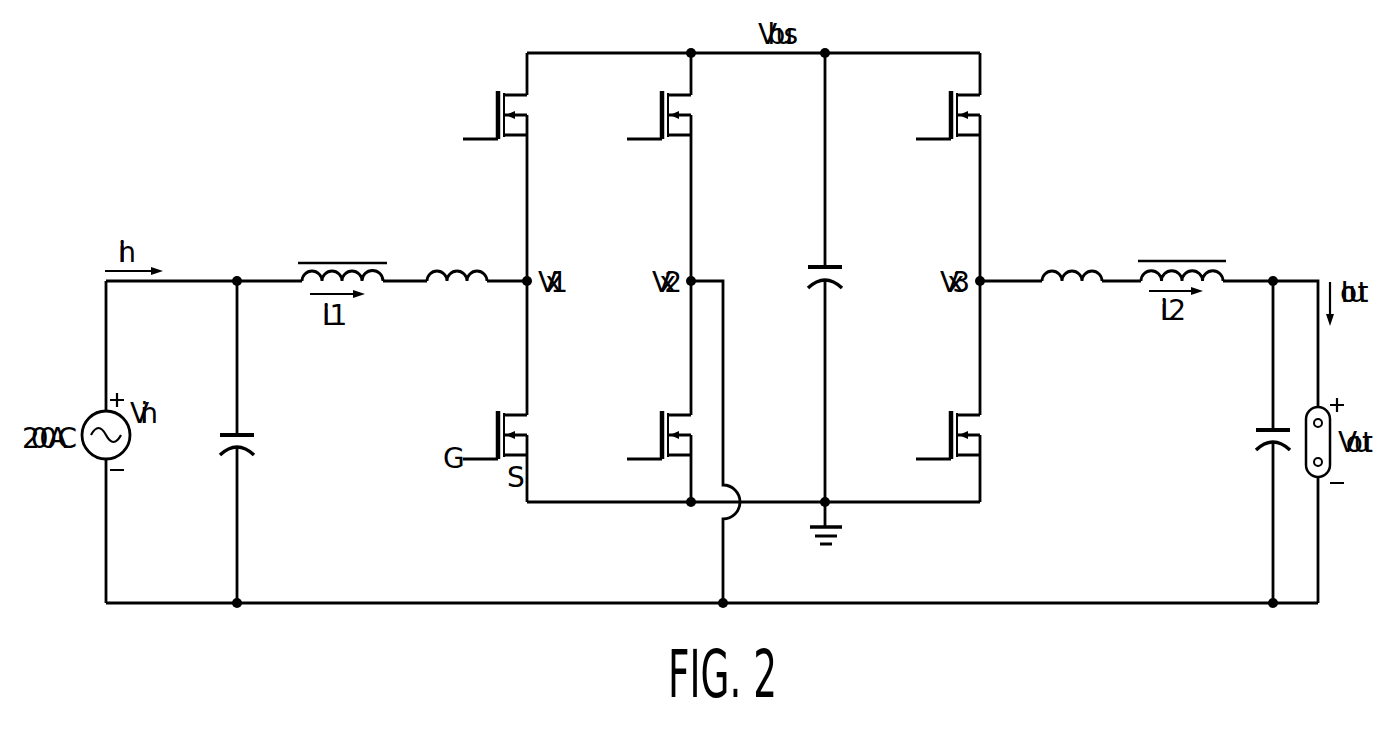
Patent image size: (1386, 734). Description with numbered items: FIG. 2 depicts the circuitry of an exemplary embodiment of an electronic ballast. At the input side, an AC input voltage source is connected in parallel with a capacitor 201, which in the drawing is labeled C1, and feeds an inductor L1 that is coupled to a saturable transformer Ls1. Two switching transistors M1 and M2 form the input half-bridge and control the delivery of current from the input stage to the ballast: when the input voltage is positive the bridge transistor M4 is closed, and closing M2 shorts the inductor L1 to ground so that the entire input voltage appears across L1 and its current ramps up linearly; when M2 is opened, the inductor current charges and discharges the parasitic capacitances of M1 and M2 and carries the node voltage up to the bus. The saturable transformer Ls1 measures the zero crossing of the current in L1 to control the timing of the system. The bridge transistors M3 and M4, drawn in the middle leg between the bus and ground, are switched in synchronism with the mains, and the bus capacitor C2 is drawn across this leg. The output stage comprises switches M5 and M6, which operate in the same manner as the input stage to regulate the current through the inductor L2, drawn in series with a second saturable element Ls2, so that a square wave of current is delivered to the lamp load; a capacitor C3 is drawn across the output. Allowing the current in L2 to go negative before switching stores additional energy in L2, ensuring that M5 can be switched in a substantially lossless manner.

The capacitor 201 is at (255, 442).
The input filter capacitor C1 is at (243, 442).
The DC bus capacitor C2 is at (816, 277).
The output filter capacitor C3 is at (1258, 442).
The inductor L1 is at (342, 254).
The inductor L2 is at (1182, 253).
The saturable transformer Ls1 is at (457, 294).
The output series inductor Ls2 is at (1072, 294).
The switching transistor M1 is at (495, 115).
The switching transistor M2 is at (495, 435).
The bridge transistor M3 is at (659, 115).
The bridge transistor M4 is at (659, 435).
The switch M5 is at (948, 115).
The switch M6 is at (948, 435).